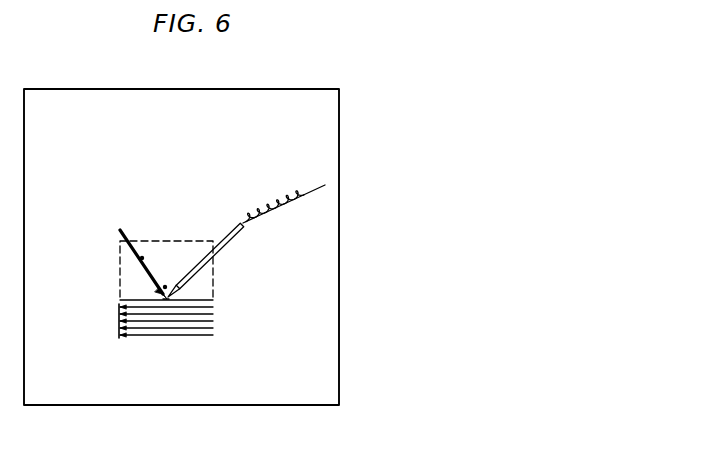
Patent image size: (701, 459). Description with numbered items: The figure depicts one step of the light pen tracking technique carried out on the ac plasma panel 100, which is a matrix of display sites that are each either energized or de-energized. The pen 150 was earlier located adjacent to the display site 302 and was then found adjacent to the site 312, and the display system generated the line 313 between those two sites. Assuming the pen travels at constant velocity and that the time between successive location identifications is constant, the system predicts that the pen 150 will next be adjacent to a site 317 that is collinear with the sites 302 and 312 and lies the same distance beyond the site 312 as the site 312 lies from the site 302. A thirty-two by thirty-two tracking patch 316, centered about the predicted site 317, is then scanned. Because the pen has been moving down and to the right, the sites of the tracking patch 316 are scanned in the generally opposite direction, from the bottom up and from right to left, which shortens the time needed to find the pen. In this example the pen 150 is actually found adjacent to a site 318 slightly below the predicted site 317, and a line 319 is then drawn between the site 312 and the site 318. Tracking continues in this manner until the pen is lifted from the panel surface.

The ac plasma panel 100 is at (339, 308).
The pen 150 is at (236, 235).
The display site 302 is at (120, 228).
The site 312 is at (140, 258).
The line 313 is at (145, 241).
The tracking patch 316 is at (213, 283).
The site 317 is at (163, 287).
The site 318 is at (162, 298).
The line 319 is at (148, 262).